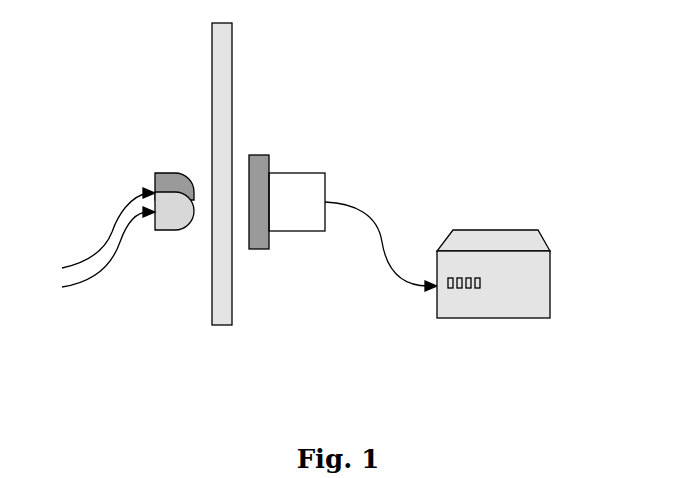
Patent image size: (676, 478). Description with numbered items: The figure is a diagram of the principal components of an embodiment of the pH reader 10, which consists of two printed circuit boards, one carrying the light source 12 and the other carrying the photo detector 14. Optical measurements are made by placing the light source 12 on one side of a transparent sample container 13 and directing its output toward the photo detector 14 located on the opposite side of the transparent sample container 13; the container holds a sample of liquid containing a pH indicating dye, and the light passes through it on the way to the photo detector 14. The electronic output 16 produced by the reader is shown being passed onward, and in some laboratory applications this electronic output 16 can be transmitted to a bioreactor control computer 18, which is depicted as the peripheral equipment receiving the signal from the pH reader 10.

The pH reader 10 is at (536, 75).
The light source 12 is at (175, 212).
The transparent sample container 13 is at (222, 137).
The photo detector 14 is at (272, 175).
The electronic output 16 is at (305, 193).
The bioreactor control computer 18 is at (512, 240).